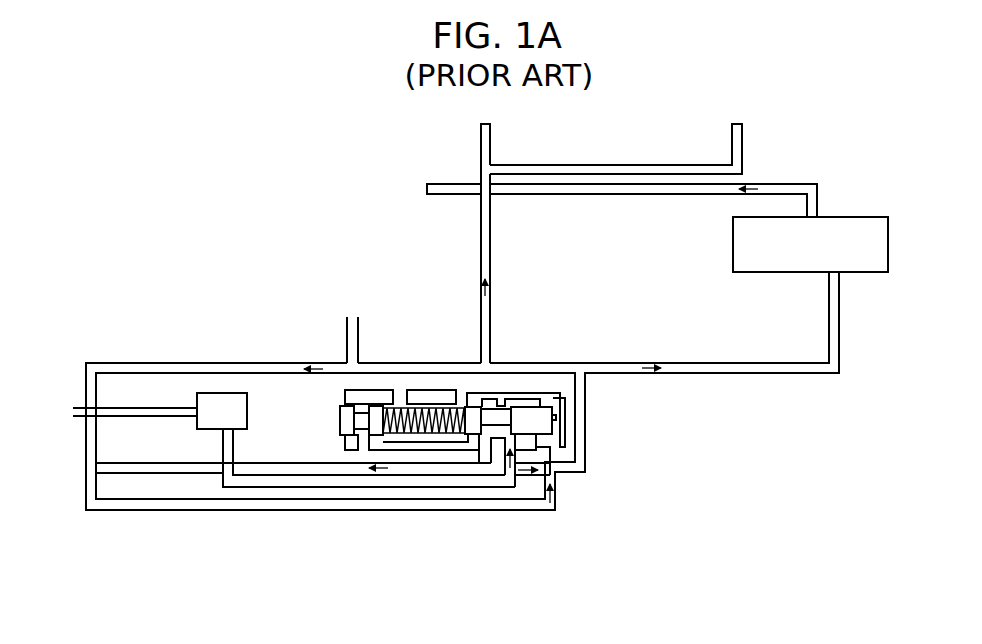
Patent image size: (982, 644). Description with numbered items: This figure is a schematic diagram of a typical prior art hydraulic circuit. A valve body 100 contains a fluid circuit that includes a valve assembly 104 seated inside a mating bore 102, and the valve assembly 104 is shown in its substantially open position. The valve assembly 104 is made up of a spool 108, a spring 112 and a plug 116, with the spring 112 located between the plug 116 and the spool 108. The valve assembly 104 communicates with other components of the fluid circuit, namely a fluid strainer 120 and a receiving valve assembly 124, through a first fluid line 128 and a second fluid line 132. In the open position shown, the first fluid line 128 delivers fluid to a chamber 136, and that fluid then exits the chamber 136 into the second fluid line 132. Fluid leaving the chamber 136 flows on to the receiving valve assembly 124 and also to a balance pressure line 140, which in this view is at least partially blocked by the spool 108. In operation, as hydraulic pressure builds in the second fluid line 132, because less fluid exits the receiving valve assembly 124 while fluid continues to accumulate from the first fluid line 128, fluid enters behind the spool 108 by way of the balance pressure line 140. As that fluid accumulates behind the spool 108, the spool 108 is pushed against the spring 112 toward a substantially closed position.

The valve body 100 is at (166, 276).
The mating bore 102 is at (562, 396).
The valve assembly 104 is at (434, 387).
The spool 108 is at (524, 393).
The spring 112 is at (427, 434).
The plug 116 is at (340, 421).
The fluid strainer 120 is at (203, 423).
The receiving valve assembly 124 is at (791, 256).
The first fluid line 128 is at (515, 483).
The second fluid line 132 is at (463, 466).
The chamber 136 is at (504, 405).
The balance pressure line 140 is at (551, 465).